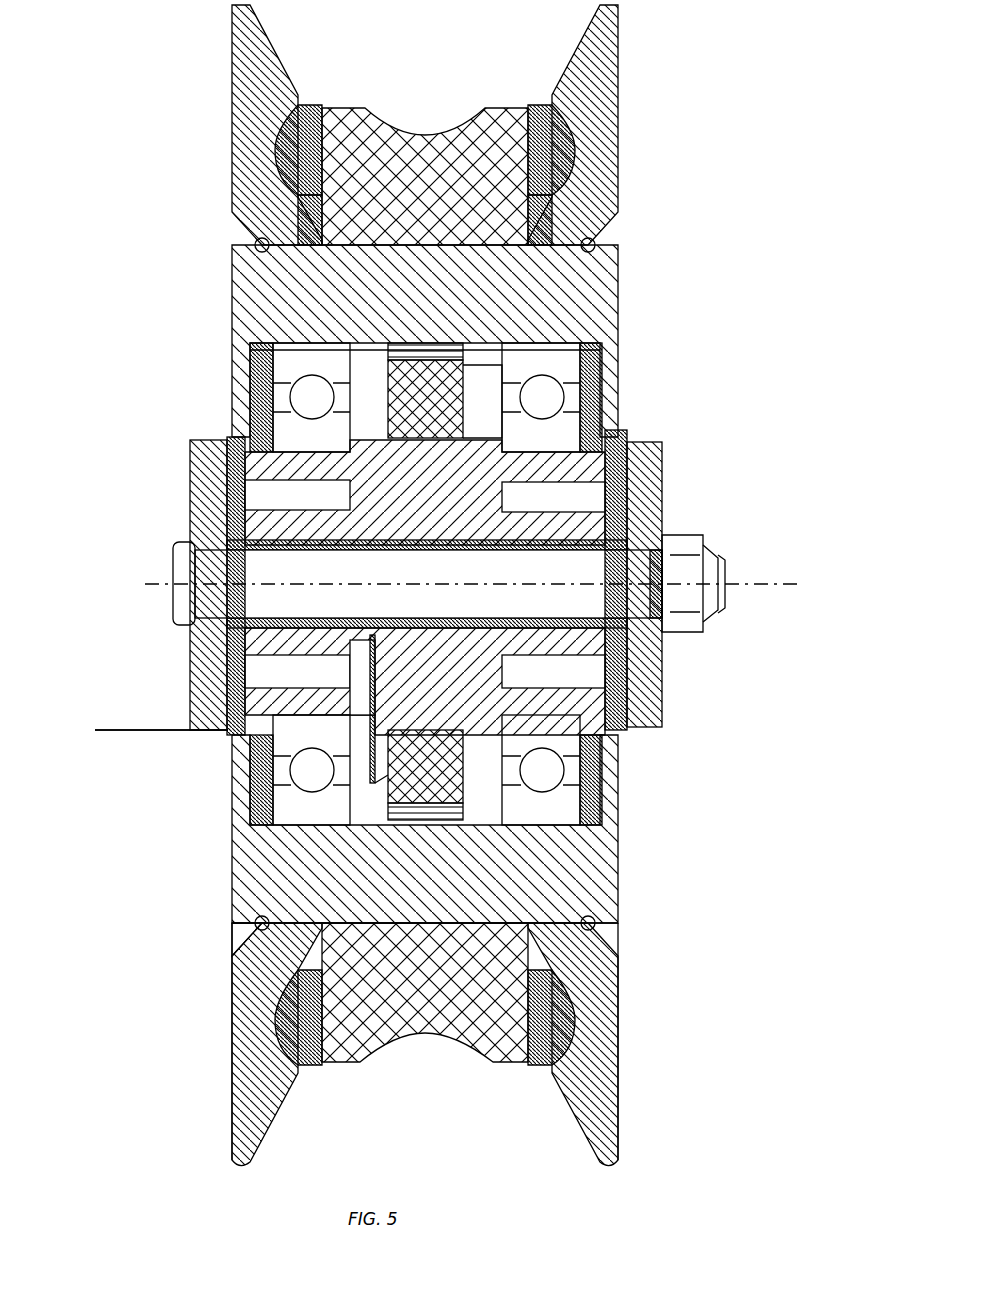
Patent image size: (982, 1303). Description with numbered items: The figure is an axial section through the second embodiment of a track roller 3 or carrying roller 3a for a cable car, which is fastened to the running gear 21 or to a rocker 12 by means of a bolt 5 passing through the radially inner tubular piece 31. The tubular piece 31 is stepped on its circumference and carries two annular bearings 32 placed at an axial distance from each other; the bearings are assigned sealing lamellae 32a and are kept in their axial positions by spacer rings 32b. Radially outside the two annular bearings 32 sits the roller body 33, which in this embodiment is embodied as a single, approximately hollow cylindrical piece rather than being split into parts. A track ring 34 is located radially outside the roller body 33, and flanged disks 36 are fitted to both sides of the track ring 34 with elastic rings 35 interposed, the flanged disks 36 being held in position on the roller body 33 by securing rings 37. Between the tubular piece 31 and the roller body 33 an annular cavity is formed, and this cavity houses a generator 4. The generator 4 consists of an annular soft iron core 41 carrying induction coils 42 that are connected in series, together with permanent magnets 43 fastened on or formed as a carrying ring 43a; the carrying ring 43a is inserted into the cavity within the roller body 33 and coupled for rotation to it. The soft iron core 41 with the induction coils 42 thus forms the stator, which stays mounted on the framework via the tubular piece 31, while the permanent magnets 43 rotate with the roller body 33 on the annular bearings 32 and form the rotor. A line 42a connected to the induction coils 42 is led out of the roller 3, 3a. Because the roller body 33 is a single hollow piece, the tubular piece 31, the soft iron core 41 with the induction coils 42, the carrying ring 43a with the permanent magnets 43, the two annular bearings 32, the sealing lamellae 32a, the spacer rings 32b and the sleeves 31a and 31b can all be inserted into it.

The track roller 3 is at (210, 1022).
The carrying roller 3a is at (425, 1041).
The generator 4 is at (492, 395).
The bolt 5 is at (640, 612).
The rocker 12 is at (665, 690).
The running gear 21 is at (190, 697).
The tubular piece 31 is at (640, 515).
The sleeve 31a is at (225, 540).
The sleeve 31b is at (365, 545).
The annular bearing 32 is at (295, 420).
The sealing lamella 32a is at (240, 428).
The spacer ring 32b is at (240, 455).
The roller body 33 is at (620, 290).
The track ring 34 is at (350, 115).
The elastic ring 35 is at (300, 170).
The flanged disk 36 is at (290, 110).
The securing ring 37 is at (255, 243).
The soft iron core 41 is at (280, 350).
The induction coil 42 is at (290, 372).
The line 42a is at (120, 735).
The permanent magnet 43 is at (470, 362).
The carrying ring 43a is at (470, 342).